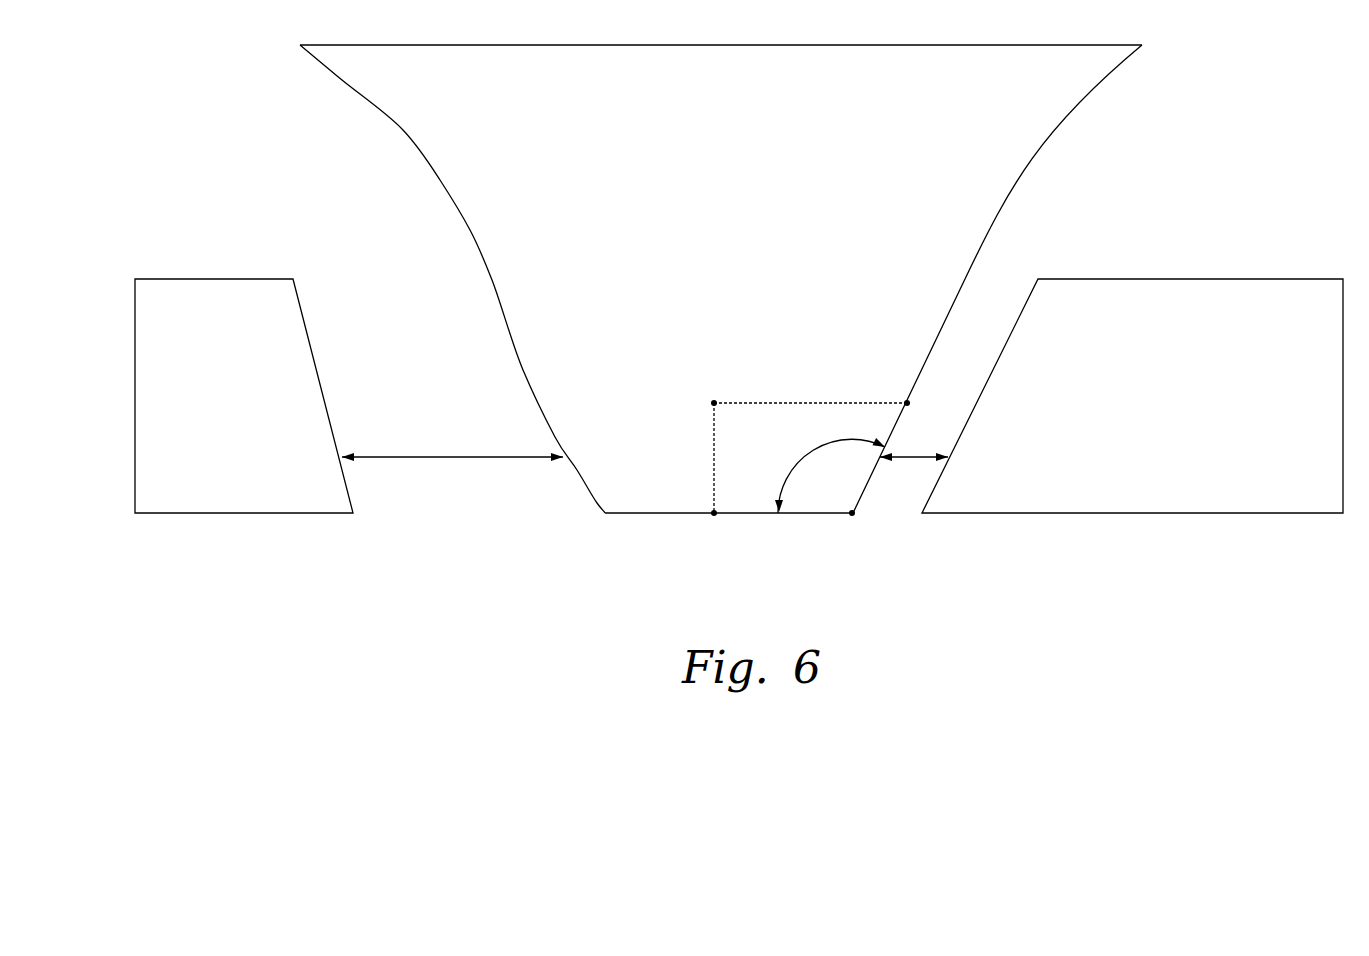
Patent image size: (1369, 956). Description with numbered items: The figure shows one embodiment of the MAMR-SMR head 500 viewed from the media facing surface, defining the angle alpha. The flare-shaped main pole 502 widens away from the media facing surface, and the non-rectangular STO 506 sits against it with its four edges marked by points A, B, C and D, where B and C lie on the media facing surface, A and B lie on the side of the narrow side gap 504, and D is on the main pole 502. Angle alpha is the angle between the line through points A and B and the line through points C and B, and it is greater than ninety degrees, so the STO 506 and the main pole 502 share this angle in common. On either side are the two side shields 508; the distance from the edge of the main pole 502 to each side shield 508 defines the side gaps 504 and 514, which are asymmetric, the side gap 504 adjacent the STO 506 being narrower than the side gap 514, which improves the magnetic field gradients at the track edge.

The MAMR-SMR head 500 is at (168, 127).
The flare-shaped main pole 502 is at (662, 503).
The side gap 504 is at (905, 458).
The non-rectangular STO 506 is at (757, 503).
The side shields 508 is at (224, 504).
The side gap 514 is at (450, 457).